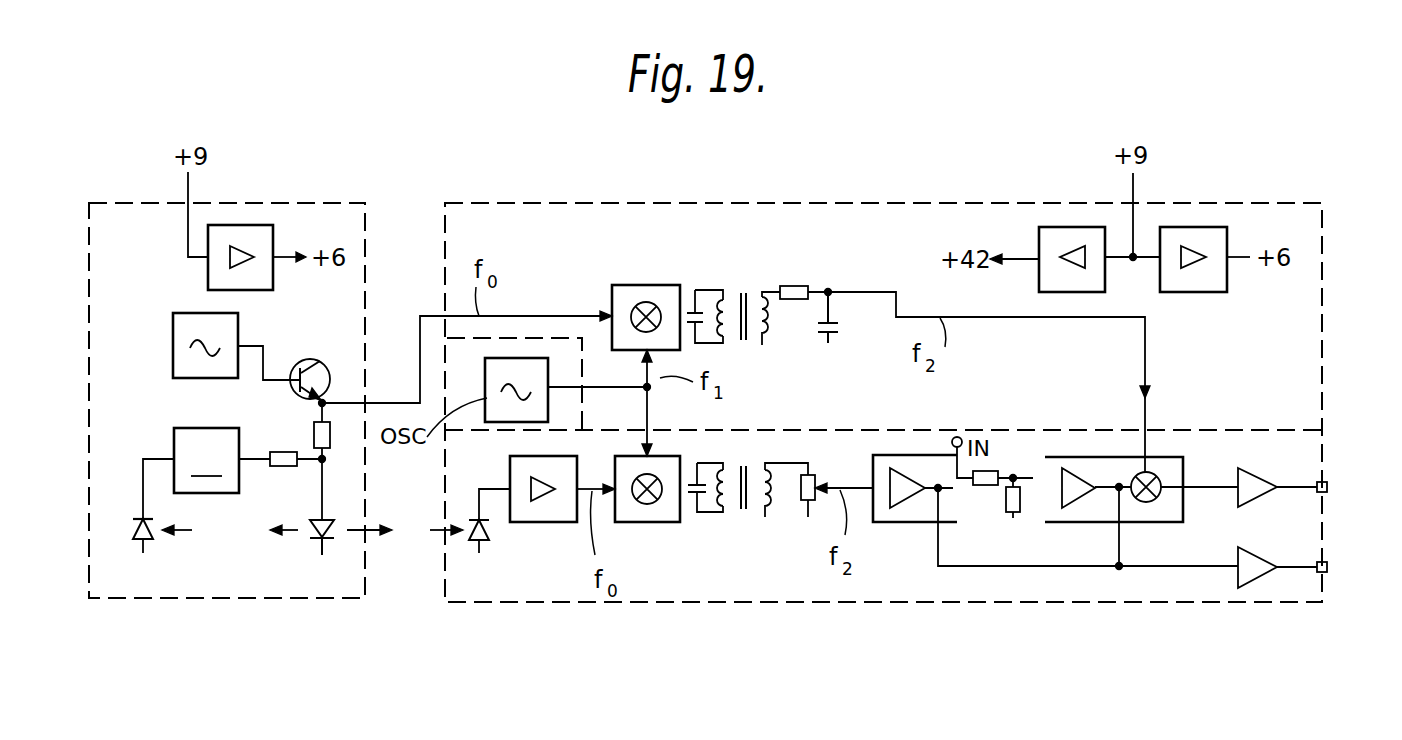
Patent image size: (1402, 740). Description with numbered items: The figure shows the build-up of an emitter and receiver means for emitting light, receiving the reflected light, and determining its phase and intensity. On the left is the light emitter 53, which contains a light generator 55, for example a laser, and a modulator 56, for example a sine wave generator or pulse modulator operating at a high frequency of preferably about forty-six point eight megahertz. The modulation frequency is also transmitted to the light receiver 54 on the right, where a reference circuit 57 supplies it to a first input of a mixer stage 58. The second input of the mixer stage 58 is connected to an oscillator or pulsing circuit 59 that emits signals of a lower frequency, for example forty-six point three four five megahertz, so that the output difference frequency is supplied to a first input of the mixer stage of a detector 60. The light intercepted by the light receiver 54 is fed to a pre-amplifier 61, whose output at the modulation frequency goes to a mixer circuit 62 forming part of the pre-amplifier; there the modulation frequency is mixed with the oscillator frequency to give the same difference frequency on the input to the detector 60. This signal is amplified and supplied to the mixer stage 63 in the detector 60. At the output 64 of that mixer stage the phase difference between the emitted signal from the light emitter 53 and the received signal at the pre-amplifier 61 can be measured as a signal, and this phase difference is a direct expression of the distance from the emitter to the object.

The light emitter 53 is at (292, 588).
The light receiver 54 is at (1180, 588).
The light generator 55 is at (206, 460).
The modulator 56 is at (187, 339).
The reference circuit 57 is at (830, 270).
The mixer stage 58 is at (640, 285).
The oscillator or pulsing circuit 59 is at (527, 367).
The detector 60 is at (1141, 448).
The pre-amplifier 61 is at (543, 512).
The mixer circuit 62 is at (665, 510).
The mixer stage 63 is at (1145, 477).
The output 64 is at (1293, 491).